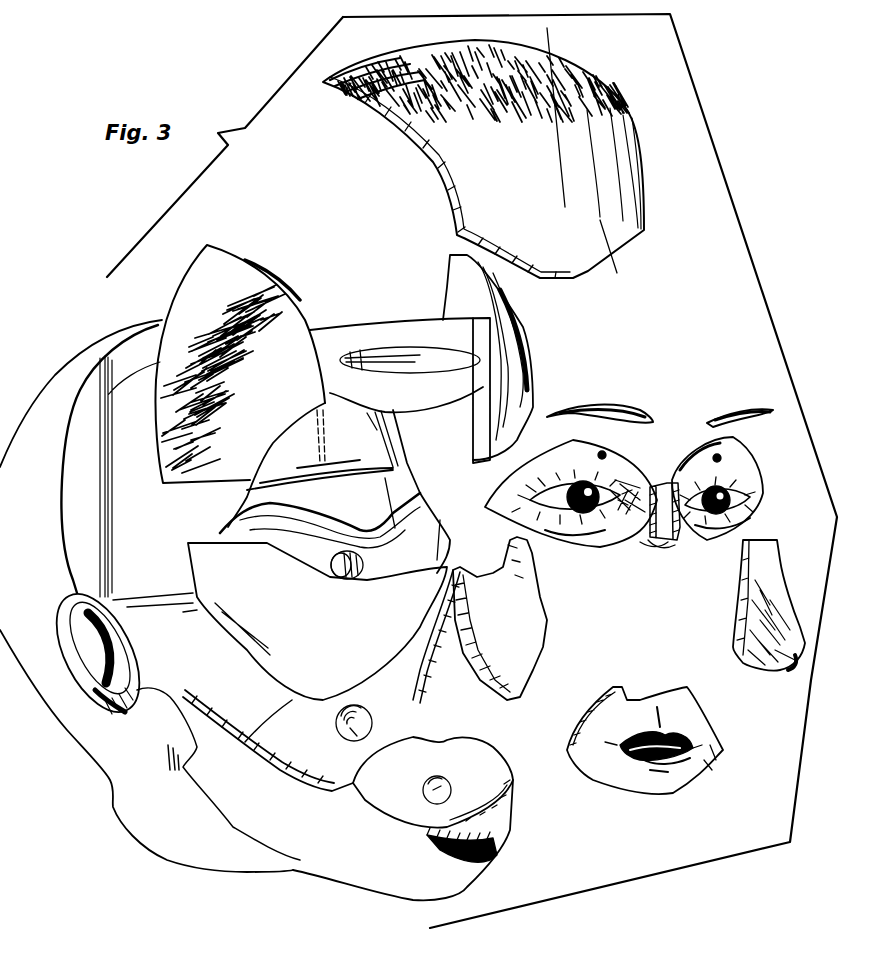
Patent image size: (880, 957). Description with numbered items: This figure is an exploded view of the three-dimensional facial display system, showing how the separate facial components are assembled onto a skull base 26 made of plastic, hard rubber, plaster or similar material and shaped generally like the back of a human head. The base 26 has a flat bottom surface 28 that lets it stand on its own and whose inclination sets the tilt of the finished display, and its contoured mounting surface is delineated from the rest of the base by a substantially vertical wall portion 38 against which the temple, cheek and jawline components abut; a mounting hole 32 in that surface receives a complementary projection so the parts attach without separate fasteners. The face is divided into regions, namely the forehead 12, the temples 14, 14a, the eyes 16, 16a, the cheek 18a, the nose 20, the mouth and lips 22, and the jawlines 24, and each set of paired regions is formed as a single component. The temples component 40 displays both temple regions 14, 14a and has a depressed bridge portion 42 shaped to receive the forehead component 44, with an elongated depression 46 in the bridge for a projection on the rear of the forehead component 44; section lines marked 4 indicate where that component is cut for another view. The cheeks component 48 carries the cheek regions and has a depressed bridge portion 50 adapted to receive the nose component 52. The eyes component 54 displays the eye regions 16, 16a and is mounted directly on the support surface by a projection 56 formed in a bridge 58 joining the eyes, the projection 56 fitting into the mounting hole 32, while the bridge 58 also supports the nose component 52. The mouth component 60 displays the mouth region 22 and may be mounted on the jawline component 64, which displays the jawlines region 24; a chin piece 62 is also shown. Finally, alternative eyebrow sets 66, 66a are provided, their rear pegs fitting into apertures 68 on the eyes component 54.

The section line 4- 4 is at (637, 256).
The forehead 12 is at (640, 194).
The temple 14 is at (263, 438).
The temple 14a is at (522, 376).
The eye 16 is at (577, 429).
The eye 16a is at (757, 467).
The cheek 18a is at (344, 635).
The nose 20 is at (780, 600).
The mouth and lips 22 is at (637, 703).
The jawlines 24 is at (333, 867).
The skull base 26 is at (53, 388).
The flat bottom surface 28 is at (233, 860).
The mounting holes 32 is at (330, 750).
The vertical wall portion 38 is at (73, 517).
The temples component 40 is at (314, 254).
The bridge portion 42 is at (433, 322).
The forehead component 44 is at (418, 170).
The elongated depression 46 is at (417, 363).
The cheeks component 48 is at (548, 648).
The bridge portion 50 is at (452, 627).
The nose component 52 is at (732, 625).
The eyes component 54 is at (640, 541).
The projection 56 is at (670, 542).
The bridge 58 is at (653, 493).
The mouth component 60 is at (628, 803).
The chin piece 62 is at (484, 767).
The jawline component 64 is at (380, 895).
The eyebrow set 66 is at (643, 413).
The eyebrow set 66a is at (734, 405).
The apertures 68 is at (606, 455).